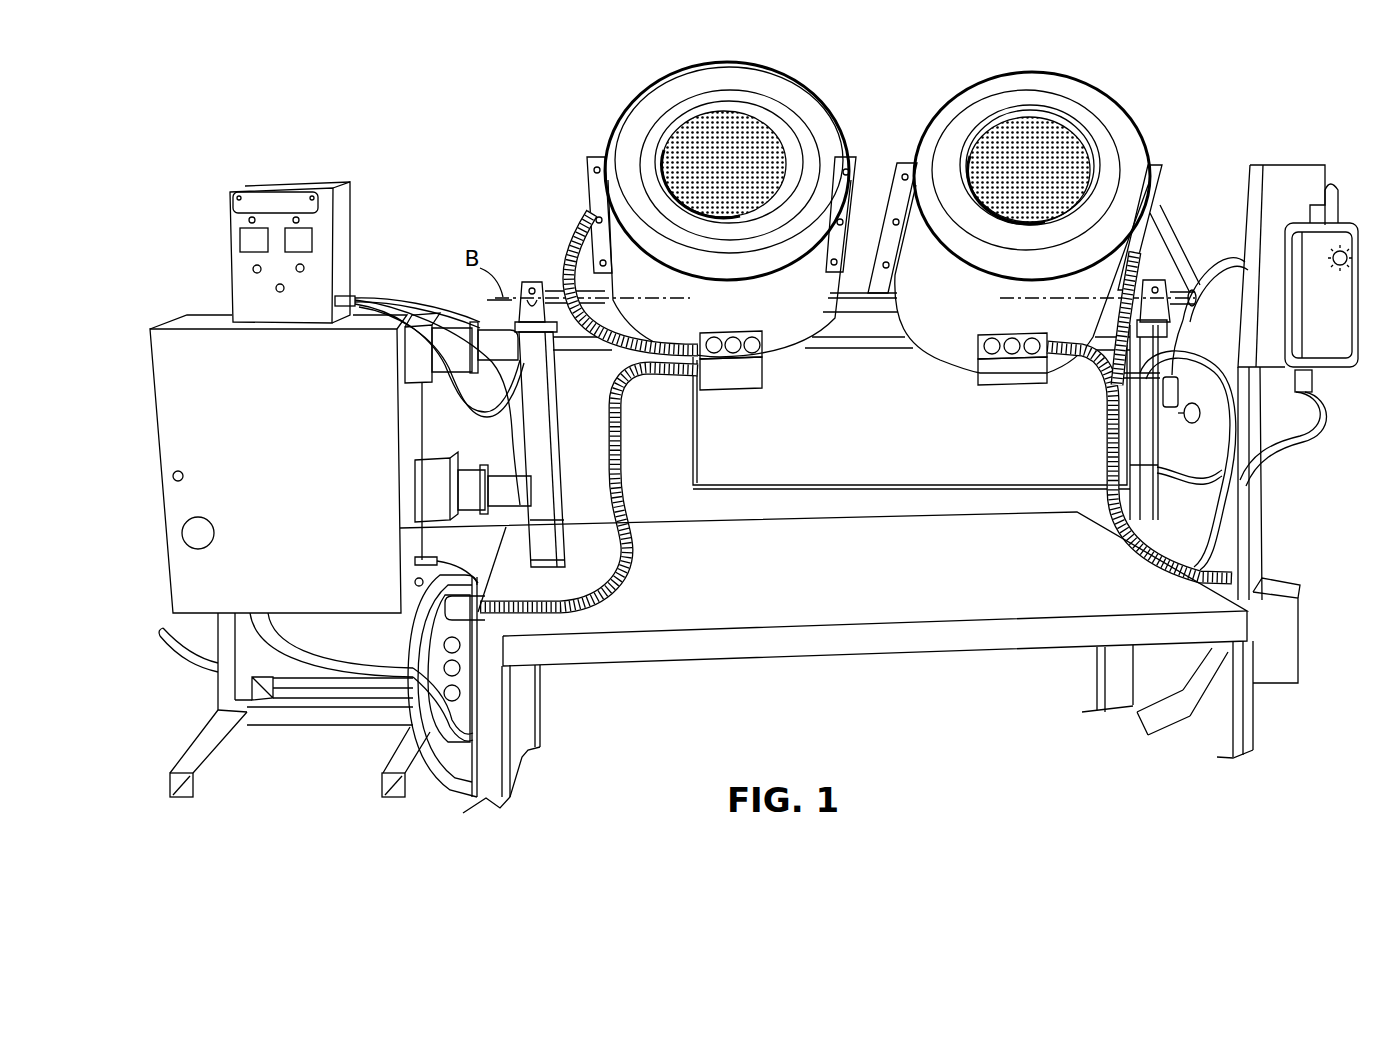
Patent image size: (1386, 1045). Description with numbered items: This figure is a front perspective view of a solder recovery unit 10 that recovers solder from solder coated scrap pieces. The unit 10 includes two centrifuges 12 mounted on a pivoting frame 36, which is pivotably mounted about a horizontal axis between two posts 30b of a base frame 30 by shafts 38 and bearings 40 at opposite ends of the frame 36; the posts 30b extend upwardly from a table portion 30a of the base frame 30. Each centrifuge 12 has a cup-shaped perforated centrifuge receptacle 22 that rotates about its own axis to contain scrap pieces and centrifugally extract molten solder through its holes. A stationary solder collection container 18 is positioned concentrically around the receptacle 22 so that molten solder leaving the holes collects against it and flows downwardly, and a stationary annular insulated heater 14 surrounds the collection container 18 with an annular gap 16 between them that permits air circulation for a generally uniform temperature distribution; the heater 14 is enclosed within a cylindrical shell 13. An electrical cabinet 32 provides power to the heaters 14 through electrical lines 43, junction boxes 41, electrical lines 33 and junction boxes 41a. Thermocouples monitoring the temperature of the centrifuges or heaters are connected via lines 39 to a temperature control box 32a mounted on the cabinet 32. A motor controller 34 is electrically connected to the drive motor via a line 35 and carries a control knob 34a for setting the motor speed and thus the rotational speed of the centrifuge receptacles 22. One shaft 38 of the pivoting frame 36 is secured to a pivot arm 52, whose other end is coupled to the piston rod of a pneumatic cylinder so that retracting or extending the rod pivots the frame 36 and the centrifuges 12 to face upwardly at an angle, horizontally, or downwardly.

The solder recovery unit 10 is at (877, 713).
The centrifuge 12 is at (506, 117).
The shell 13 is at (612, 127).
The insulated heater 14 is at (647, 108).
The annular gap 16 is at (962, 130).
The solder collection container 18 is at (977, 118).
The centrifuge receptacle 22 is at (968, 157).
The base frame 30 is at (955, 650).
The table portion 30a is at (970, 588).
The posts 30b is at (562, 405).
The electrical cabinet 32 is at (215, 350).
The temperature control box 32a is at (285, 205).
The electrical lines 33 is at (585, 210).
The motor controller 34 is at (1328, 372).
The control knob 34a is at (1338, 245).
The line 35 is at (1282, 440).
The pivoting frame 36 is at (840, 421).
The shaft 38 is at (538, 292).
The lines 39 is at (382, 300).
The bearing 40 is at (528, 282).
The junction box 41 is at (465, 707).
The junction box 41a is at (740, 378).
The electrical lines 43 is at (440, 760).
The pivot arm 52 is at (1156, 240).